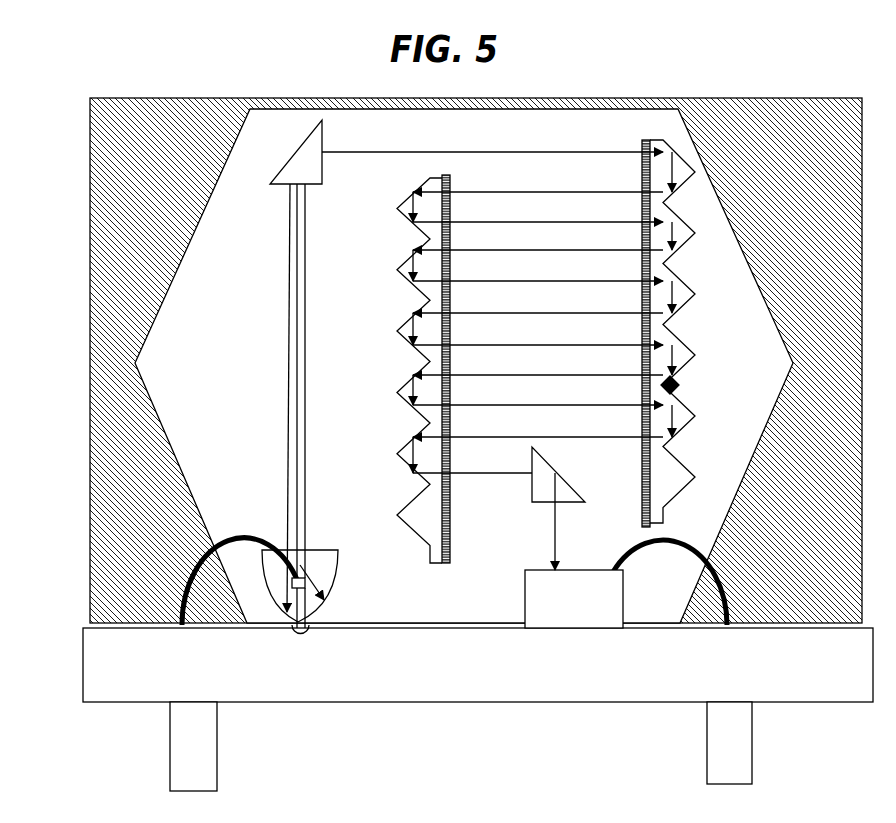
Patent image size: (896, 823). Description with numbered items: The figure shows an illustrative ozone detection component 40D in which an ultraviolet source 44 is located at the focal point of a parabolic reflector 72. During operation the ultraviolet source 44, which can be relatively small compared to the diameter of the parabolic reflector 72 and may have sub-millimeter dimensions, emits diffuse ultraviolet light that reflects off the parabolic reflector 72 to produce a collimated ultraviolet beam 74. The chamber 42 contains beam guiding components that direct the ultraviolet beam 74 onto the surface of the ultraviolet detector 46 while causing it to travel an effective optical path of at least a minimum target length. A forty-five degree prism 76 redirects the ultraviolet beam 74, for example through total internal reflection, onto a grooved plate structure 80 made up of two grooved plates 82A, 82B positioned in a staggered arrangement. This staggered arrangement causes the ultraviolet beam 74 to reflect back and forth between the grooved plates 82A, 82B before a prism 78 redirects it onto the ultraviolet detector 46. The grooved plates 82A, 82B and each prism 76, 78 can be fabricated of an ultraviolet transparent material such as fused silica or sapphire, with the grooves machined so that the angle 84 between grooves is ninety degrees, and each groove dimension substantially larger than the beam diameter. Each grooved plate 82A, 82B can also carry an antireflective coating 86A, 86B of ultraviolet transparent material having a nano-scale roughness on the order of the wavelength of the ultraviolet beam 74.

The ozone detection component 40D is at (80, 134).
The chamber 42 is at (366, 377).
The ultraviolet source 44 is at (303, 577).
The ultraviolet detector 46 is at (584, 610).
The parabolic reflector 72 is at (336, 583).
The ultraviolet beam 74 is at (284, 341).
The forty-five degree prism 76 is at (294, 155).
The prism 78 is at (571, 486).
The grooved plate structure 80 is at (397, 245).
The grooved plate 82A is at (689, 470).
The grooved plate 82B is at (408, 504).
The angle between grooves 84 is at (679, 386).
The antireflective coating 86A is at (641, 513).
The antireflective coating 86B is at (451, 527).